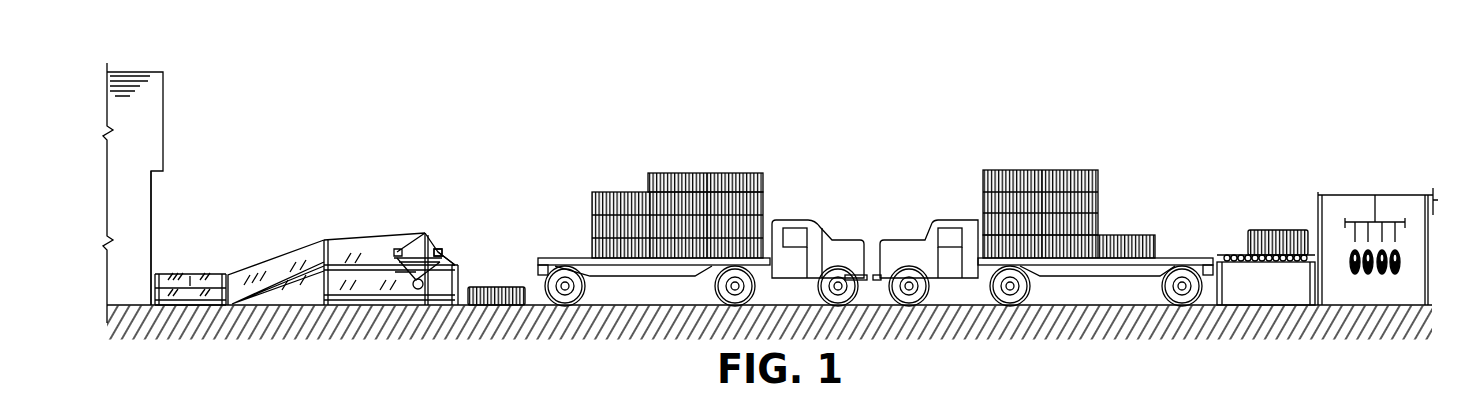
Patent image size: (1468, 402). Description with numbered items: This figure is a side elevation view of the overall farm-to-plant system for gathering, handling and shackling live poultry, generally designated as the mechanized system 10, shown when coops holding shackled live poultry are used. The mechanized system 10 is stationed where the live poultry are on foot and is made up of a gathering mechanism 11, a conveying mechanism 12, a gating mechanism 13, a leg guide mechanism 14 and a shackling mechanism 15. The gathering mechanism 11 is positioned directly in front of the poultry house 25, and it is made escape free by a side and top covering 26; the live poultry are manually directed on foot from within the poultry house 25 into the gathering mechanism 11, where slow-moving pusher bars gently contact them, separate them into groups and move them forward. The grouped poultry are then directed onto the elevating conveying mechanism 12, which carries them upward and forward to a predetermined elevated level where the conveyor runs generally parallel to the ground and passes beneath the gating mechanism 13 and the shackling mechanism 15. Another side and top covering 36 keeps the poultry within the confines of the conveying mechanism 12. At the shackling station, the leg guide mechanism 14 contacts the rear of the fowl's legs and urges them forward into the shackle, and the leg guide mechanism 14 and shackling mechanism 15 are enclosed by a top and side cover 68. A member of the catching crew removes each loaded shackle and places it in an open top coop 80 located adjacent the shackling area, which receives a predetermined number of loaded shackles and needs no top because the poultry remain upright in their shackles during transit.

The mechanized system 10 is at (410, 224).
The gathering mechanism 11 is at (197, 268).
The conveying mechanism 12 is at (286, 252).
The gating mechanism 13 is at (368, 256).
The leg guide mechanism 14 is at (441, 247).
The shackling mechanism 15 is at (460, 263).
The poultry house 25 is at (153, 193).
The side and top covering 26 is at (187, 272).
The side and top covering 36 is at (255, 262).
The top and side cover 68 is at (423, 233).
The open top coop 80 is at (490, 285).